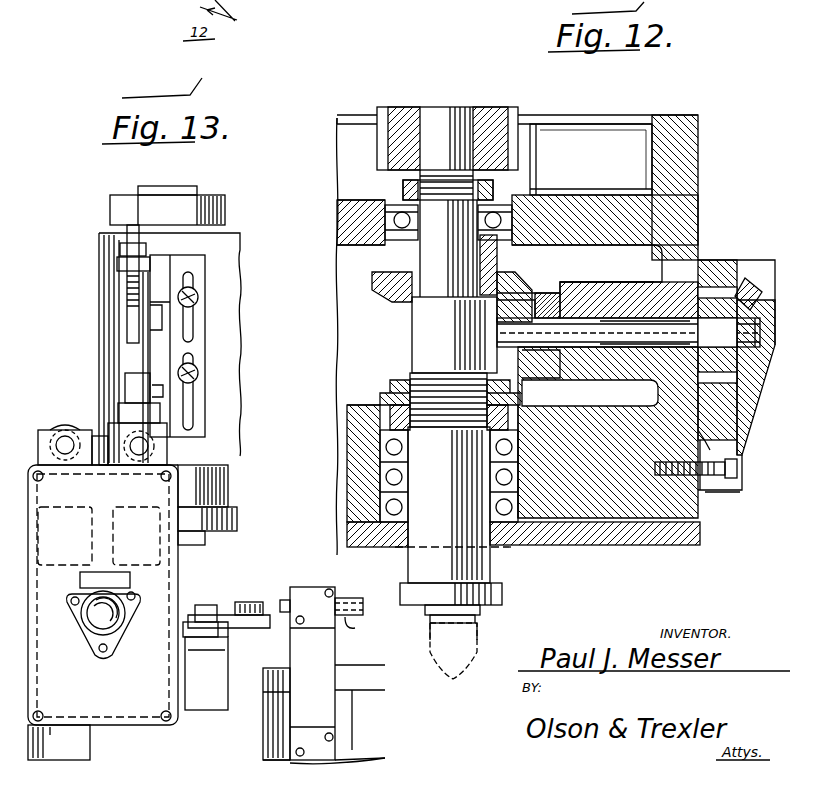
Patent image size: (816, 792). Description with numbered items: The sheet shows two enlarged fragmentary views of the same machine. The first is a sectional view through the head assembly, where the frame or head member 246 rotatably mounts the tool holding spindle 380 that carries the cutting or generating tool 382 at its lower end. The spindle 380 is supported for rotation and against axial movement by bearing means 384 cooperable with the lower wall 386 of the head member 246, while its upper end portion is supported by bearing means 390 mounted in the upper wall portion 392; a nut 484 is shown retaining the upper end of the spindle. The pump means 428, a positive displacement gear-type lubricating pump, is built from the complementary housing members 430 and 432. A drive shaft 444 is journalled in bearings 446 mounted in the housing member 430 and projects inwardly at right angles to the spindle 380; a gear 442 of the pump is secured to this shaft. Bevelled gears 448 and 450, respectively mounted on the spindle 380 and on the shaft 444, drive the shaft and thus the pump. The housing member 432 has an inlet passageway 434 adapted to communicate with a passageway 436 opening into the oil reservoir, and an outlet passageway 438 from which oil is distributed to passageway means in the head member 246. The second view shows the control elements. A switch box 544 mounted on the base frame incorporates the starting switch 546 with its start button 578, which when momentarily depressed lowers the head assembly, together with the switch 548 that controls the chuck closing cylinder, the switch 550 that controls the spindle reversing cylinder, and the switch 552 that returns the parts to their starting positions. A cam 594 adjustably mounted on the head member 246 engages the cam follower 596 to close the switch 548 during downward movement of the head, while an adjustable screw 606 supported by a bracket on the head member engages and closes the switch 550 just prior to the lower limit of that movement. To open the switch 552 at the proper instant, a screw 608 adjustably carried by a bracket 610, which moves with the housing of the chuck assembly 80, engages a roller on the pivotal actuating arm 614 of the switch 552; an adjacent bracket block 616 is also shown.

In FIG. 12, the frame member 246 is at (708, 147).
In FIG. 13, the frame member 246 is at (251, 227).
In FIG. 12, the lock nut 484 is at (487, 112).
In FIG. 12, the spindle 380 is at (425, 340).
In FIG. 12, the bearing means 390 is at (518, 222).
In FIG. 12, the upper wall portion 392 is at (598, 212).
In FIG. 12, the pump means 428 is at (730, 240).
In FIG. 12, the gear 442 is at (740, 268).
In FIG. 12, the outlet passageway 438 is at (752, 282).
In FIG. 12, the bevelled gear 448 is at (512, 273).
In FIG. 12, the housing member 430 is at (662, 300).
In FIG. 12, the bevelled gear 450 is at (540, 370).
In FIG. 12, the bearings 446 is at (605, 340).
In FIG. 12, the drive shaft 444 is at (645, 337).
In FIG. 12, the inlet passageway 434 is at (740, 418).
In FIG. 12, the housing member 432 is at (745, 465).
In FIG. 12, the passageway 436 is at (692, 432).
In FIG. 12, the bearing means 384 is at (545, 525).
In FIG. 12, the lower wall 386 is at (366, 545).
In FIG. 12, the cutting or generating tool 382 is at (473, 640).
In FIG. 13, the adjustable screw 606 is at (130, 296).
In FIG. 13, the cam 594 is at (160, 358).
In FIG. 13, the switch 550 is at (179, 452).
In FIG. 13, the cam follower 596 is at (136, 462).
In FIG. 13, the switch box 544 is at (27, 472).
In FIG. 13, the switch 548 is at (99, 380).
In FIG. 13, the starting switch 546 is at (135, 608).
In FIG. 13, the start button 578 is at (90, 635).
In FIG. 13, the pivotal actuating arm 614 is at (250, 623).
In FIG. 13, the switch 552 is at (213, 655).
In FIG. 13, the bracket block 616 is at (268, 604).
In FIG. 13, the bracket 610 is at (298, 712).
In FIG. 13, the screw 608 is at (359, 629).
In FIG. 13, the chuck assembly 80 is at (425, 737).